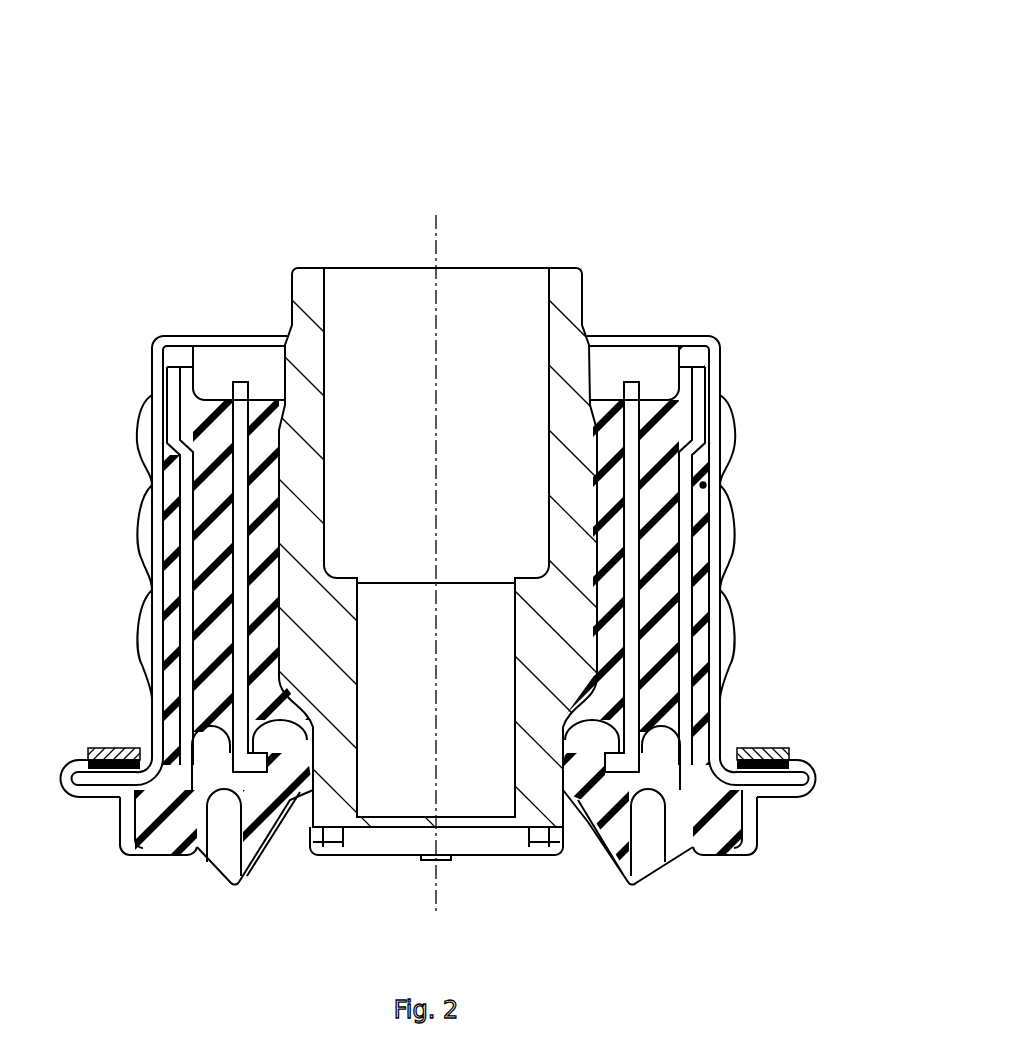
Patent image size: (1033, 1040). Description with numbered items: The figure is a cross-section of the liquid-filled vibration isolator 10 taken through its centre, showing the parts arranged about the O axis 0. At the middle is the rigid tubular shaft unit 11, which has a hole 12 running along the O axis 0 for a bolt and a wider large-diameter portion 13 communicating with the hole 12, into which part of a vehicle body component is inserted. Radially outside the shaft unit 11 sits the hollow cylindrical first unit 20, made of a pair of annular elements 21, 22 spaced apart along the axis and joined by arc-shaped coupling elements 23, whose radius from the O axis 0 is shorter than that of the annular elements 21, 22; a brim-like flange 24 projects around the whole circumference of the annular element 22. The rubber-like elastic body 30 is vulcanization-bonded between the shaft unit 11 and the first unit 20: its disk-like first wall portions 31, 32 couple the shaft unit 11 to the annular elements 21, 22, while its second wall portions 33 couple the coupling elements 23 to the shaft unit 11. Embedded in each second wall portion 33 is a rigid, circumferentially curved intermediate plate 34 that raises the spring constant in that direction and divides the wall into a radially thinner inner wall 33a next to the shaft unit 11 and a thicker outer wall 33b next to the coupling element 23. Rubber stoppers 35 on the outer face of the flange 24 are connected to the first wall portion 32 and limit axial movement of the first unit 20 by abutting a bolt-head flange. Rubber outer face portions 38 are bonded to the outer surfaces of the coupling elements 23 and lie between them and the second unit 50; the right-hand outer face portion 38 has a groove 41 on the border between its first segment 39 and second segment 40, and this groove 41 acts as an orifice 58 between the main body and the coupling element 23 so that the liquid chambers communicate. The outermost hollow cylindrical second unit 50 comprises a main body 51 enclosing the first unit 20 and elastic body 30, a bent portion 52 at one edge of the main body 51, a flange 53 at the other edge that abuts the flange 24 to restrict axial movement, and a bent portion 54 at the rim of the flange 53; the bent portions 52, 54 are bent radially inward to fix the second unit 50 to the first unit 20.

The liquid-filled vibration isolator 10 is at (750, 100).
The O axis 0 is at (432, 222).
The shaft unit 11 is at (568, 288).
The hole 12 is at (385, 810).
The large-diameter portion 13 is at (330, 414).
The first unit 20 is at (146, 336).
The annular element 21 is at (175, 392).
The annular element 22 is at (170, 733).
The coupling element 23 is at (185, 586).
The flange 24 is at (128, 800).
The elastic body 30 is at (657, 358).
The first wall portion 31 is at (665, 425).
The first wall portion 32 is at (672, 726).
The second wall portion 33 is at (822, 530).
The inner wall 33a is at (615, 630).
The outer wall 33b is at (665, 577).
The intermediate plate 34 is at (642, 690).
The stopper 35 is at (712, 832).
The outer face portion 38 is at (158, 633).
The first segment 39 is at (715, 660).
The second segment 40 is at (707, 465).
The groove 41 is at (705, 468).
The second unit 50 is at (105, 475).
The main body 51 is at (156, 498).
The bent portion 52 is at (187, 340).
The flange 53 is at (90, 757).
The bent portion 54 is at (95, 795).
The orifice 58 is at (707, 486).